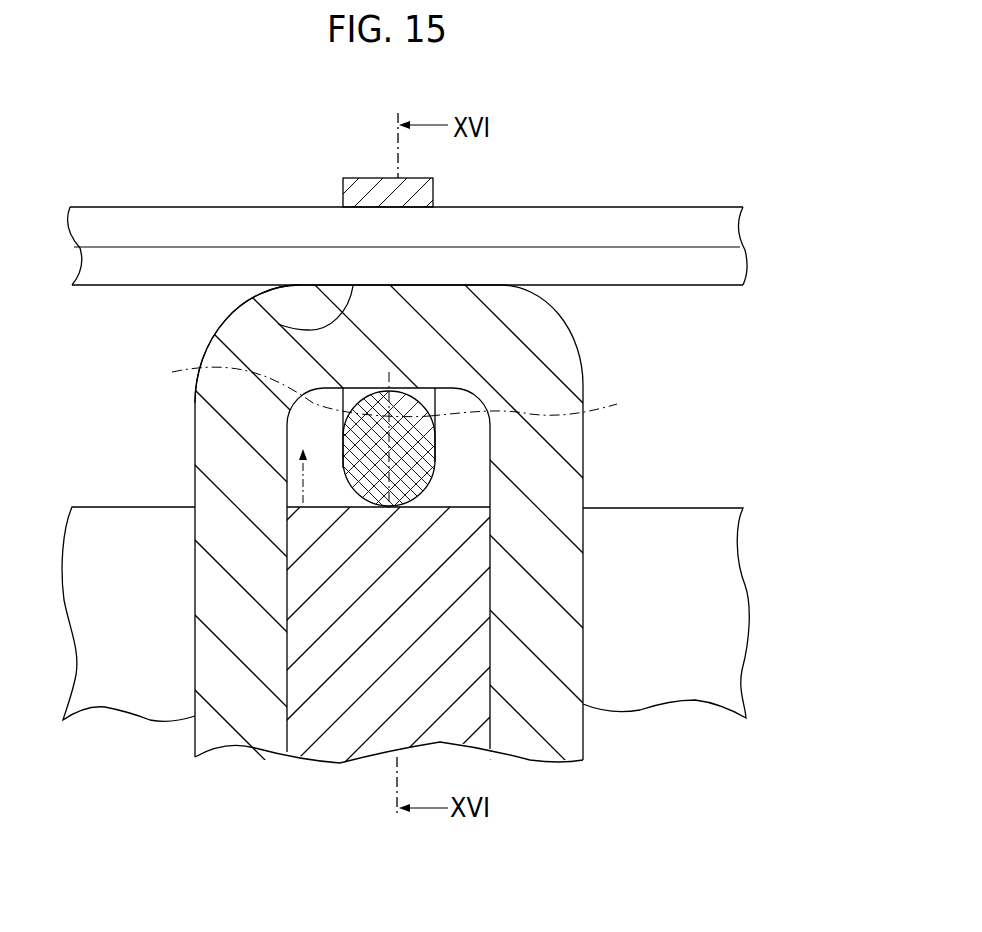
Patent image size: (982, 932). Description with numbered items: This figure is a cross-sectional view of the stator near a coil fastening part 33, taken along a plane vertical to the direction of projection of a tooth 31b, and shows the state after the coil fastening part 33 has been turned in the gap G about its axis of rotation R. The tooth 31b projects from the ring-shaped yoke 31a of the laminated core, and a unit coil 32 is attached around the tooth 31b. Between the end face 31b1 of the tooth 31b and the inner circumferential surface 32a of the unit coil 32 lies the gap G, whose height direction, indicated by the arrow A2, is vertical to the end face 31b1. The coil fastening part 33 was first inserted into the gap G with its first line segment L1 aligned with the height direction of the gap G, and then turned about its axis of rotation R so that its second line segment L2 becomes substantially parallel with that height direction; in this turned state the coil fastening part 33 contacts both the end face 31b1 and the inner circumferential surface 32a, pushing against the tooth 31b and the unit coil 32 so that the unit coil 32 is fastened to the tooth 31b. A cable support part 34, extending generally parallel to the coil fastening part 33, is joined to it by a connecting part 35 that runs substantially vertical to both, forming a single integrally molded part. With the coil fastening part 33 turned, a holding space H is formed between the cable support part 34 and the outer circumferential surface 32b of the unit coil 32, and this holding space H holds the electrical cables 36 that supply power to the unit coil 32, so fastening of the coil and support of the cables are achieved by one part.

The yoke 31a is at (706, 507).
The tooth 31b is at (442, 748).
The end face of the tooth 31b1 is at (323, 508).
The unit coil 32 is at (588, 496).
The inner circumferential surface of the unit coil 32a is at (297, 350).
The outer circumferential surface of the unit coil 32b is at (278, 324).
The coil fastening part 33 is at (343, 453).
The cable support part 34 is at (433, 188).
The connecting part 35 is at (423, 400).
The electrical cables 36 is at (690, 207).
The holding space H is at (447, 202).
The gap G is at (481, 499).
The axis of rotation of the coil fastening part R is at (437, 467).
The first line segment L1 is at (537, 402).
The second line segment L2 is at (284, 388).
The arrow indicating height direction of the gap A2 is at (300, 490).